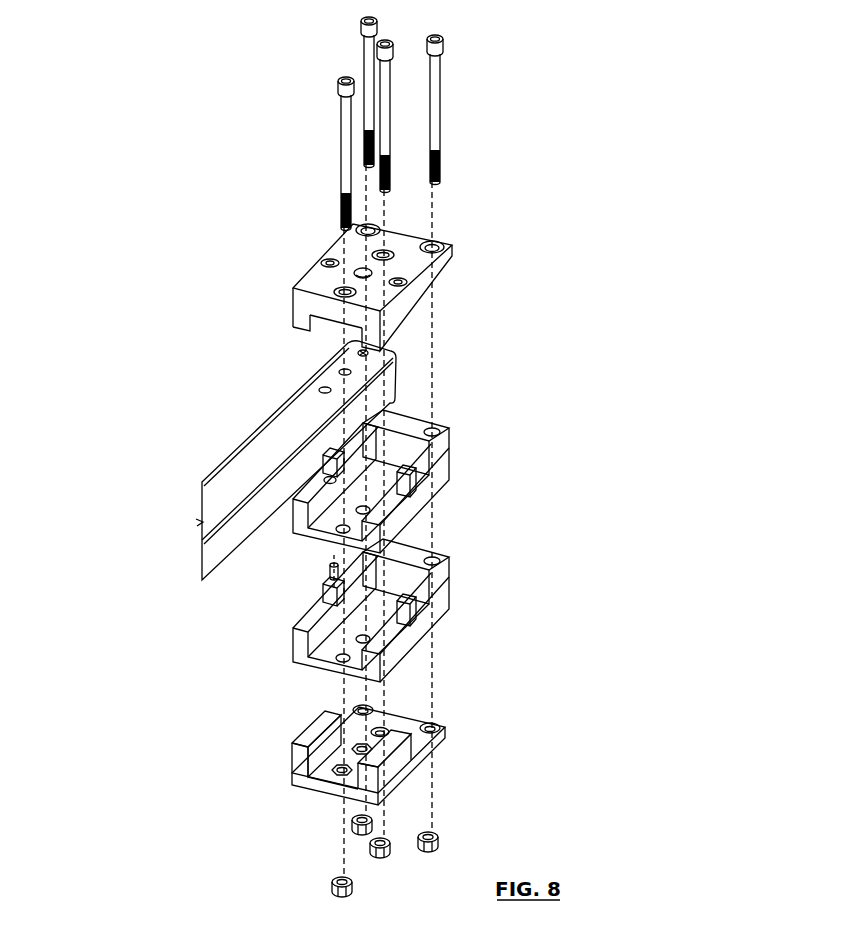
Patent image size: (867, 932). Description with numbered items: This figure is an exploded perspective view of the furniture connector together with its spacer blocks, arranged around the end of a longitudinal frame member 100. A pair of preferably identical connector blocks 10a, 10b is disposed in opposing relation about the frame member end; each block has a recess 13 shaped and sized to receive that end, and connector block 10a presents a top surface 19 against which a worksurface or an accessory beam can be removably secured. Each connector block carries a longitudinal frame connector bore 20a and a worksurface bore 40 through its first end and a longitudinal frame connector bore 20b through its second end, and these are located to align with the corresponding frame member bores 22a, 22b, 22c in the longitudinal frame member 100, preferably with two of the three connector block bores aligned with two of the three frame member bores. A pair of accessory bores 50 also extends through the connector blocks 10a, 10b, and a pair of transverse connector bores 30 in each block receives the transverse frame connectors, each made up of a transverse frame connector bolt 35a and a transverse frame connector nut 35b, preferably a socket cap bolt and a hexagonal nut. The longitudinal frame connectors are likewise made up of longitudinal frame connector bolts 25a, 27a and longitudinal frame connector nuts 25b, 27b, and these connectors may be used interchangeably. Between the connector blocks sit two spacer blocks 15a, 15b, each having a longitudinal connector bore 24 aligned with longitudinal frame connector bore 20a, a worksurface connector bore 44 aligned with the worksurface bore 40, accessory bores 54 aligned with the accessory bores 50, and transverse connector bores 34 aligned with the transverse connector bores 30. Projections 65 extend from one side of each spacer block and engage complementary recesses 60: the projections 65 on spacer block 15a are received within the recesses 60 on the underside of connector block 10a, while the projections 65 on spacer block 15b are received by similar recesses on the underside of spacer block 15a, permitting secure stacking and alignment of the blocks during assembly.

The longitudinal frame member 100 is at (228, 467).
The connector block 10a is at (292, 303).
The connector block 10b is at (291, 762).
The recess 13 is at (332, 335).
The spacer block 15a is at (433, 473).
The spacer block 15b is at (425, 605).
The top surface 19 is at (400, 232).
The longitudinal frame connector bore 20a is at (368, 291).
The longitudinal frame connector bore 20b is at (404, 263).
The frame member bore 22a is at (319, 389).
The frame member bore 22b is at (351, 375).
The frame member bore 22c is at (368, 356).
The longitudinal connector bore 24 is at (336, 531).
The longitudinal frame connector bolt 25a is at (340, 106).
The longitudinal frame connector nut 25b is at (331, 882).
The longitudinal frame connector bolt 27a is at (391, 90).
The longitudinal frame connector nut 27b is at (385, 855).
The transverse connector bore 30 is at (369, 225).
The transverse connector bore 34 is at (441, 428).
The transverse frame connector bolt 35a is at (364, 37).
The transverse frame connector nut 35b is at (351, 819).
The worksurface bore 40 is at (355, 271).
The worksurface connector bore 44 is at (333, 481).
The accessory bore 50 is at (326, 260).
The accessory bore 54 is at (327, 585).
The recess 60 is at (430, 296).
The projection 65 is at (446, 453).